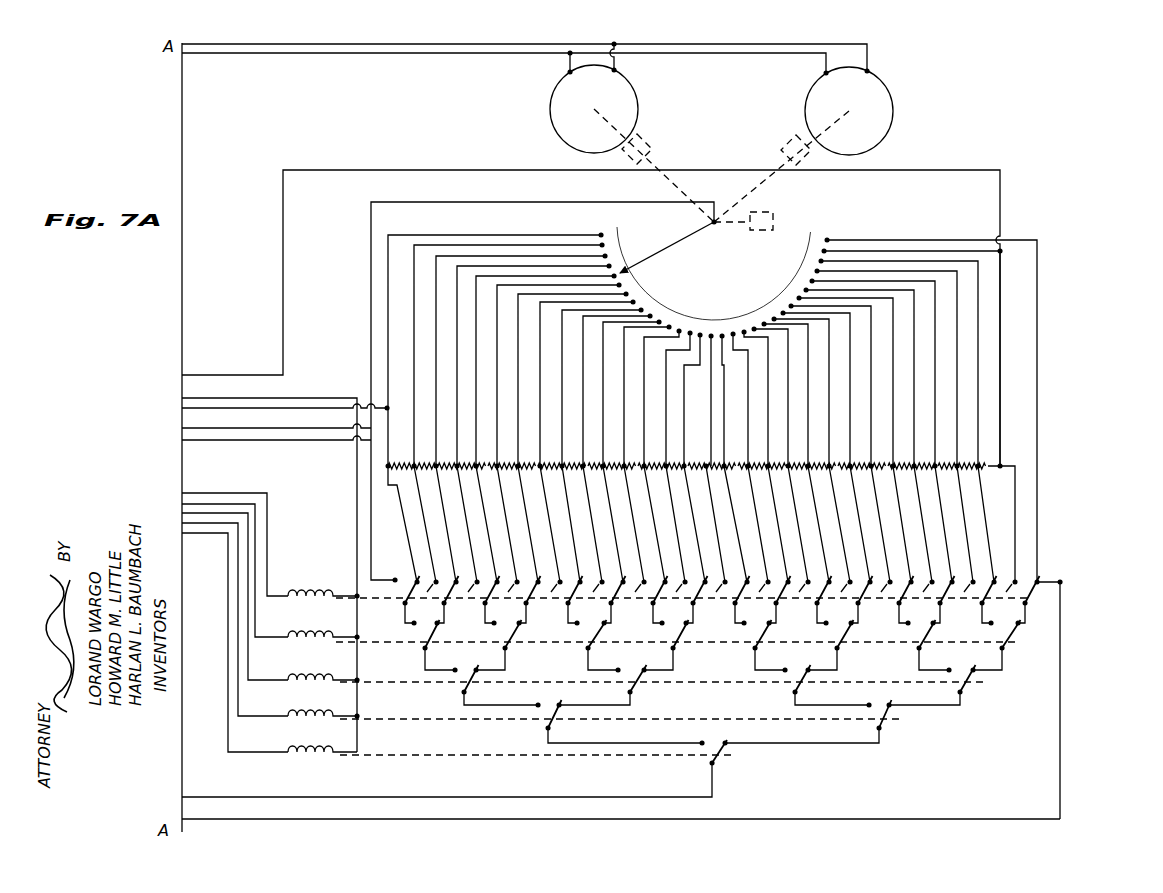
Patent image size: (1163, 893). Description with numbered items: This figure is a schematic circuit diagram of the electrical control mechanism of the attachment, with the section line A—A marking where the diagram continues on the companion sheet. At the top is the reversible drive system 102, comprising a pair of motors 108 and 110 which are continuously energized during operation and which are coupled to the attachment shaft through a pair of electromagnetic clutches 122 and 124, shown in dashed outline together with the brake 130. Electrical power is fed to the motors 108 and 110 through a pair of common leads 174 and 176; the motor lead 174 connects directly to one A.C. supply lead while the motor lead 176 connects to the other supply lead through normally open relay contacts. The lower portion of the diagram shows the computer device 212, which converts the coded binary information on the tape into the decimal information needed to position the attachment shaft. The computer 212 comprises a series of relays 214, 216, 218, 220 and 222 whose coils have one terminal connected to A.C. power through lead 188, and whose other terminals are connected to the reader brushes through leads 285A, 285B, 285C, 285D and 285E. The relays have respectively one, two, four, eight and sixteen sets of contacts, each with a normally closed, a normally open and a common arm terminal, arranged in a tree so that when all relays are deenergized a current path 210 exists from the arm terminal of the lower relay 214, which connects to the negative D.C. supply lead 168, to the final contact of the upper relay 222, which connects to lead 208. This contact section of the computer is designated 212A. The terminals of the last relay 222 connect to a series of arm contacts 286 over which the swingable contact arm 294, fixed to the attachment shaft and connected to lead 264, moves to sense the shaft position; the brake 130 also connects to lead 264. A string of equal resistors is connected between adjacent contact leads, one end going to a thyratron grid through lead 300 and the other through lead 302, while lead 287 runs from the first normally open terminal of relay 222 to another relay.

The reversible drive system 102 is at (933, 102).
The motor 108 is at (550, 108).
The motor 110 is at (808, 111).
The electromagnetic clutch 122 is at (648, 140).
The electromagnetic clutch 124 is at (782, 142).
The brake 130 is at (755, 237).
The negative D.C. supply lead 168 is at (214, 796).
The motor lead 174 is at (421, 45).
The motor lead 176 is at (207, 55).
The lead 188 is at (322, 388).
The lead 208 is at (312, 808).
The current path 210 is at (835, 745).
The computer device 212 is at (1050, 452).
The contact section of the computer 212A is at (1069, 655).
The relay 214 is at (300, 752).
The relay 216 is at (300, 716).
The relay 218 is at (300, 680).
The relay 220 is at (300, 640).
The relay 222 is at (300, 600).
The lead 264 is at (302, 426).
The lead 285A is at (268, 510).
The lead 285B is at (256, 537).
The lead 285C is at (248, 557).
The lead 285D is at (238, 569).
The lead 285E is at (228, 591).
The arm contacts 286 is at (616, 224).
The lead 287 is at (272, 440).
The swingable contact arm 294 is at (677, 241).
The lead 300 is at (205, 412).
The lead 302 is at (245, 373).